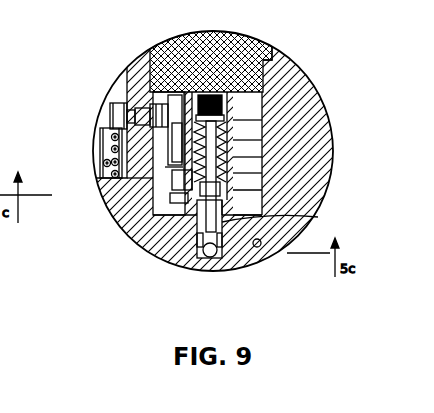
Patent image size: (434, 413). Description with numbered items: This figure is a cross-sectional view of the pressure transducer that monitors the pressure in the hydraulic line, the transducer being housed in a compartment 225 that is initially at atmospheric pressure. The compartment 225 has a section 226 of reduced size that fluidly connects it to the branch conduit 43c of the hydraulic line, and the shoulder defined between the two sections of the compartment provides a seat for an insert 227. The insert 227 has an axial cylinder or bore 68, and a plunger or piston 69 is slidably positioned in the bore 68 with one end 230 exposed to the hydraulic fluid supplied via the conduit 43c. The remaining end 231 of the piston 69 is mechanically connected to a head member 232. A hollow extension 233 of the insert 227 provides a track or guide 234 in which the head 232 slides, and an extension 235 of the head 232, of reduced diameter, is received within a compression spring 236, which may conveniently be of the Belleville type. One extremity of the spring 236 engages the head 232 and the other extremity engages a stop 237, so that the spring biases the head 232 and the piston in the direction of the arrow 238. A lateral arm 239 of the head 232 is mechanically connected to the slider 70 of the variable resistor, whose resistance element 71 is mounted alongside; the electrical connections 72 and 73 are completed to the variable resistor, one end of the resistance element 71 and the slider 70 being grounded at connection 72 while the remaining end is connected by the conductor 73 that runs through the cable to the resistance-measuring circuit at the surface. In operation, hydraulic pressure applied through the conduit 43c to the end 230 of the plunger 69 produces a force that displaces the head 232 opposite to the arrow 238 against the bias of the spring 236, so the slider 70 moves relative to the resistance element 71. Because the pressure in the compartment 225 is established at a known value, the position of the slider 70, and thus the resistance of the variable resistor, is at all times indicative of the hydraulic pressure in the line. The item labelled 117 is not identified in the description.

The compartment 225 is at (262, 118).
The section of reduced size 226 is at (258, 247).
The insert 227 is at (318, 253).
The end of piston 230 is at (220, 262).
The remaining end of piston 231 is at (248, 195).
The head member 232 is at (248, 165).
The hollow extension of insert 233 is at (247, 149).
The track or guide 234 is at (247, 110).
The extension of head 235 is at (248, 132).
The compression spring 236 is at (160, 148).
The stop 237 is at (210, 92).
The arrow 238 is at (127, 181).
The lateral arm 239 is at (118, 225).
The cylinder or bore 68 is at (153, 243).
The plunger or piston 69 is at (232, 208).
The movable arm or slider 70 is at (112, 197).
The resistance element 71 is at (100, 152).
The electrical connection or ground point 72 is at (318, 217).
The electrical conductor 73 is at (110, 110).
The pin 117 is at (270, 256).
The branch of hydraulic line 43c is at (172, 311).